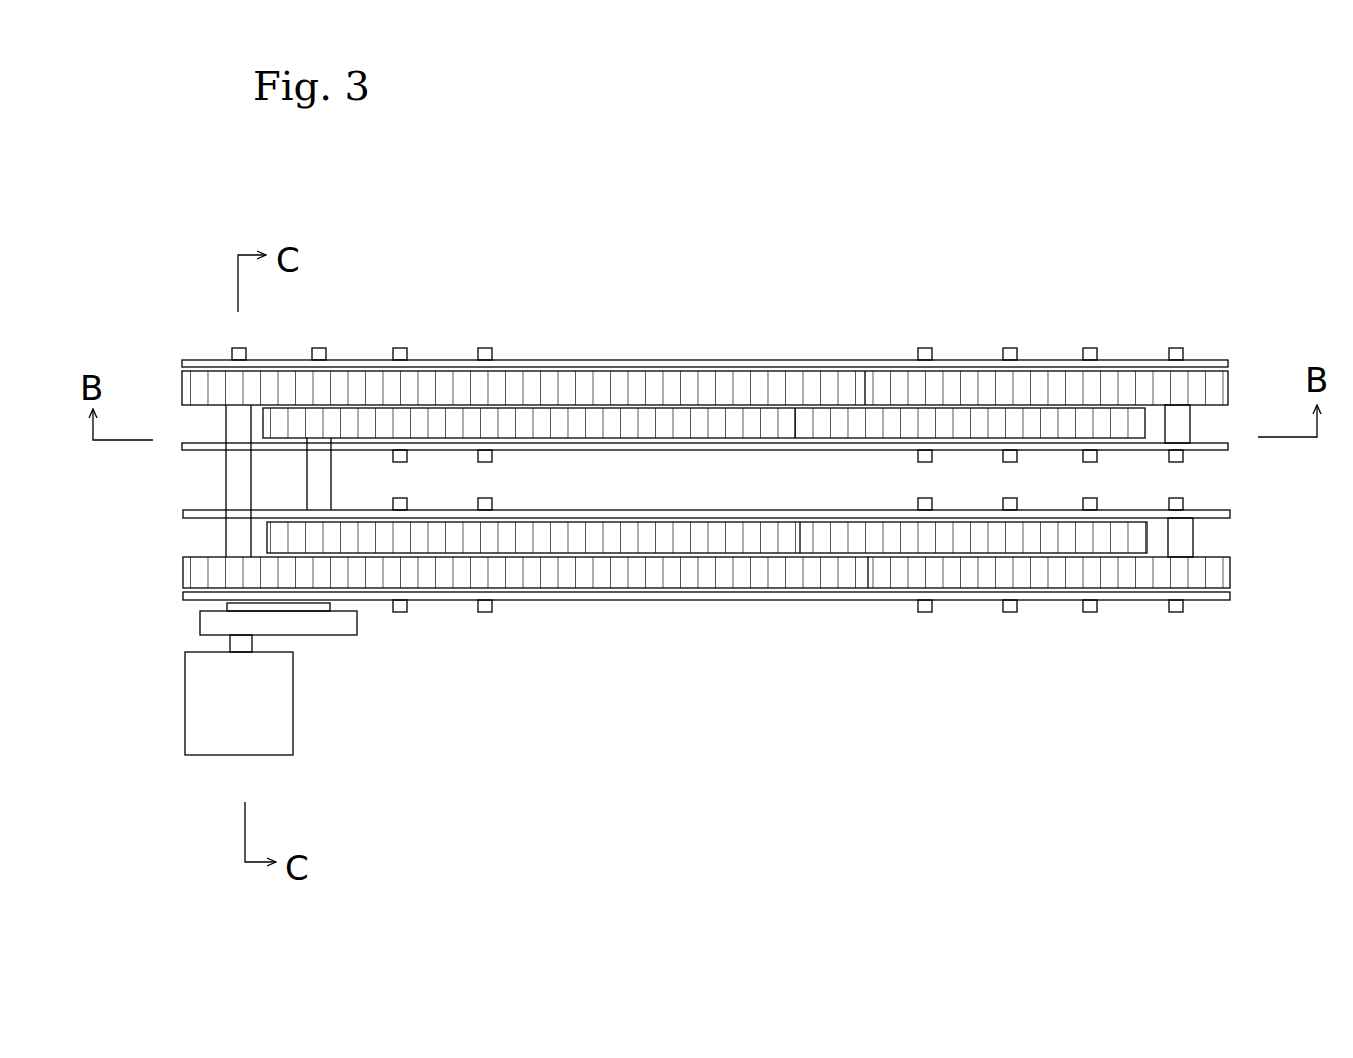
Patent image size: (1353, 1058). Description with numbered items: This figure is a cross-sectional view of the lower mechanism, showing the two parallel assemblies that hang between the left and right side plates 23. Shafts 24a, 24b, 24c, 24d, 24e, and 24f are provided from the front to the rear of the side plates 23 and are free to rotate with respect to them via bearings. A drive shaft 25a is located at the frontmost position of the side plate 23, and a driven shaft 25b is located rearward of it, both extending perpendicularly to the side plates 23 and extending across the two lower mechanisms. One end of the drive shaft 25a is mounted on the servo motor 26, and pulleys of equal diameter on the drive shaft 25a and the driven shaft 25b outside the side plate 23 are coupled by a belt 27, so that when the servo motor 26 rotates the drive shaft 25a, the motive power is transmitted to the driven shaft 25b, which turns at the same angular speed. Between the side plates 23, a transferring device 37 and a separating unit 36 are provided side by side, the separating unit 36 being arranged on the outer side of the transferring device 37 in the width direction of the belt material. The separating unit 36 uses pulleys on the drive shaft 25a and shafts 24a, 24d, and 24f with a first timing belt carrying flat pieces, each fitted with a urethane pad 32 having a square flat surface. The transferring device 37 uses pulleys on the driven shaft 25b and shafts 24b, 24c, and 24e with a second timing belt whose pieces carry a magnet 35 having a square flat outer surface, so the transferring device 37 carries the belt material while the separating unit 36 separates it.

The side plate 23 is at (1218, 363).
The shaft 24a is at (403, 347).
The shaft 24b is at (485, 347).
The shaft 24c is at (928, 347).
The shaft 24d is at (1010, 347).
The shaft 24e is at (1090, 347).
The shaft 24f is at (1176, 347).
The drive shaft 25a is at (233, 478).
The driven shaft 25b is at (330, 605).
The servo motor 26 is at (282, 733).
The belt 27 is at (335, 627).
The pad 32 is at (648, 387).
The magnet 35 is at (705, 420).
The separating unit 36 is at (865, 390).
The transferring device 37 is at (795, 420).